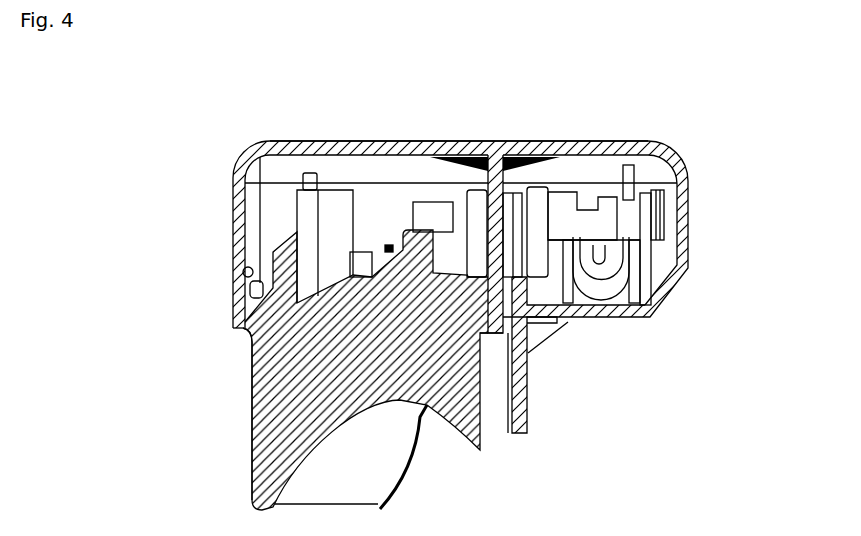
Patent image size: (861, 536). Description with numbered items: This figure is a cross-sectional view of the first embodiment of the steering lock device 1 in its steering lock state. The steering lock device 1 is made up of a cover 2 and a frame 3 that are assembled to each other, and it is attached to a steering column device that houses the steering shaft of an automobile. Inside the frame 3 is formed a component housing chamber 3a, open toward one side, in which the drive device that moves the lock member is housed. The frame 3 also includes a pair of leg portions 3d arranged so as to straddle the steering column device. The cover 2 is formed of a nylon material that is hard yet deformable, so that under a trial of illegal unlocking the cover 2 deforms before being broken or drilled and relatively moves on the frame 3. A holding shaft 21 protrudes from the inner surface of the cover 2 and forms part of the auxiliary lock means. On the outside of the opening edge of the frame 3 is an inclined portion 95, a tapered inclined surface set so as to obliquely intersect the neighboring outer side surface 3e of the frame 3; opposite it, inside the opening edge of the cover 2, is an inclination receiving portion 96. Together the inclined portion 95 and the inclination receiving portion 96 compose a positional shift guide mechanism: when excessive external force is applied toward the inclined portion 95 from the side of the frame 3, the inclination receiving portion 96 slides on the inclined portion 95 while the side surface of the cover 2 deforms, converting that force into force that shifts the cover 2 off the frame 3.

The steering lock device 1 is at (680, 130).
The cover 2 is at (688, 176).
The frame 3 is at (634, 319).
The component housing chamber 3a is at (358, 168).
The leg portion 3d is at (265, 434).
The outer side surface 3e is at (252, 365).
The holding shaft 21 is at (522, 166).
The inclined portion 95 is at (258, 287).
The inclination receiving portion 96 is at (246, 272).